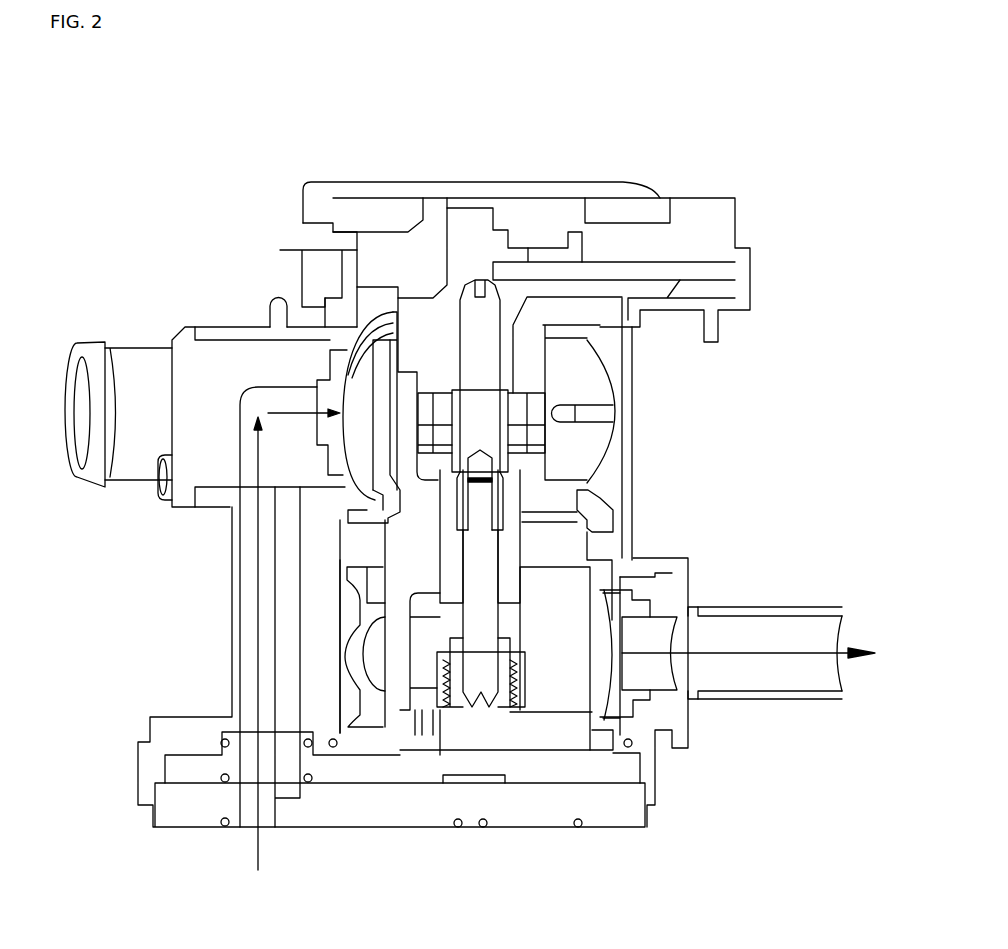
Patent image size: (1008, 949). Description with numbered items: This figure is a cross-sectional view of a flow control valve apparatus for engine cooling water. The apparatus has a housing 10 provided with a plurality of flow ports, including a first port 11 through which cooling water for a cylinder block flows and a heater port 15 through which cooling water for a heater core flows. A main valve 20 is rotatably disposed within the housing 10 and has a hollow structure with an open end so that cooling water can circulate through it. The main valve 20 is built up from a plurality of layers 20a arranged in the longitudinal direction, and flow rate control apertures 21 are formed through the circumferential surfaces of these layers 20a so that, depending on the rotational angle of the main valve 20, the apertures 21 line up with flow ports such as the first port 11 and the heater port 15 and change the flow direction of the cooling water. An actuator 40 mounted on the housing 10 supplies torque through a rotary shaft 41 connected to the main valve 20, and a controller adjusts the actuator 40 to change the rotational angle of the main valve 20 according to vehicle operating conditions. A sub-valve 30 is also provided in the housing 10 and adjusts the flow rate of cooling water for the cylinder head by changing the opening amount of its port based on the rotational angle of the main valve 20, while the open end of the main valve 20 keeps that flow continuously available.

The housing 10 is at (647, 403).
The first port 11 is at (255, 400).
The heater port 15 is at (773, 697).
The main valve 20 is at (402, 535).
The layers 20a is at (365, 405).
The flow rate control apertures 21 is at (600, 413).
The sub-valve 30 is at (536, 732).
The actuator 40 is at (497, 227).
The rotary shaft 41 is at (480, 407).